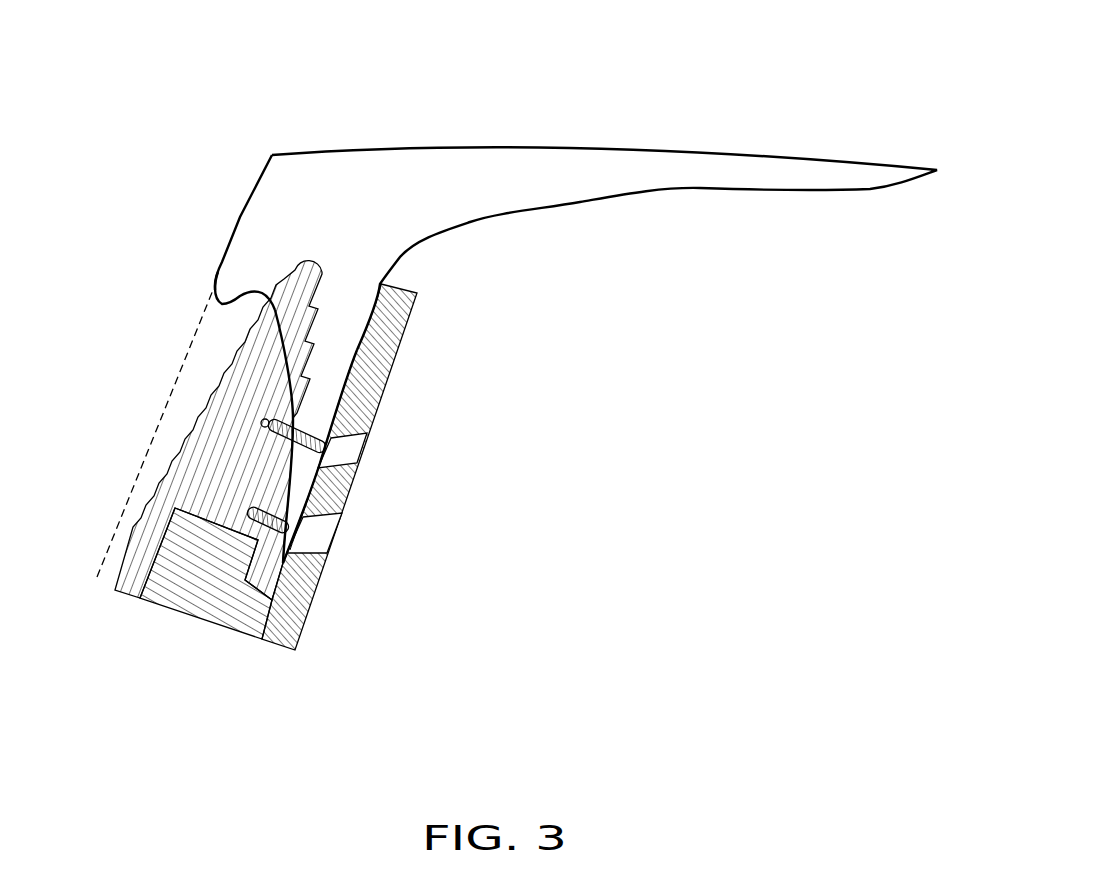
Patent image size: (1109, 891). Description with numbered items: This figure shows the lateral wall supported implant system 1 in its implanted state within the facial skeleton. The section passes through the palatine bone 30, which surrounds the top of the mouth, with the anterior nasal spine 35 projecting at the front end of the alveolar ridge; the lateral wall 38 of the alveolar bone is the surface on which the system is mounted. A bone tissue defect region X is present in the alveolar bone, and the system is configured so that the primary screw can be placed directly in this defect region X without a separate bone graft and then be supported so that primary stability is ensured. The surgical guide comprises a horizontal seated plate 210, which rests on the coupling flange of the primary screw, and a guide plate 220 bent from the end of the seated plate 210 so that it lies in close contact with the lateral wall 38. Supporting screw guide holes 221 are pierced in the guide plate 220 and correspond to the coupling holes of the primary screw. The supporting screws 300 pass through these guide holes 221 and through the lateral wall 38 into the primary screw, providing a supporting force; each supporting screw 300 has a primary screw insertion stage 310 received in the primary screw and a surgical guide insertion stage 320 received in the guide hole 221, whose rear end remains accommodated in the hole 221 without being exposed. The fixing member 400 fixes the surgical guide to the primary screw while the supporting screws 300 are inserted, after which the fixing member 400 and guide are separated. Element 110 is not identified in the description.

The lateral wall supported implant system 1 is at (279, 710).
The palatine bone 30 is at (645, 192).
The anterior nasal spine 35 is at (205, 312).
The lateral wall 38 is at (332, 373).
The first stepped locking member 110 is at (246, 387).
The seated plate 210 is at (124, 590).
The guide plate 220 is at (292, 608).
The supporting screw guide holes 221 is at (353, 455).
The supporting screws 300 is at (340, 497).
The primary screw insertion stage 310 is at (290, 433).
The surgical guide insertion stage 320 is at (332, 432).
The fixing member 400 is at (190, 605).
The bone tissue defect region X is at (152, 478).